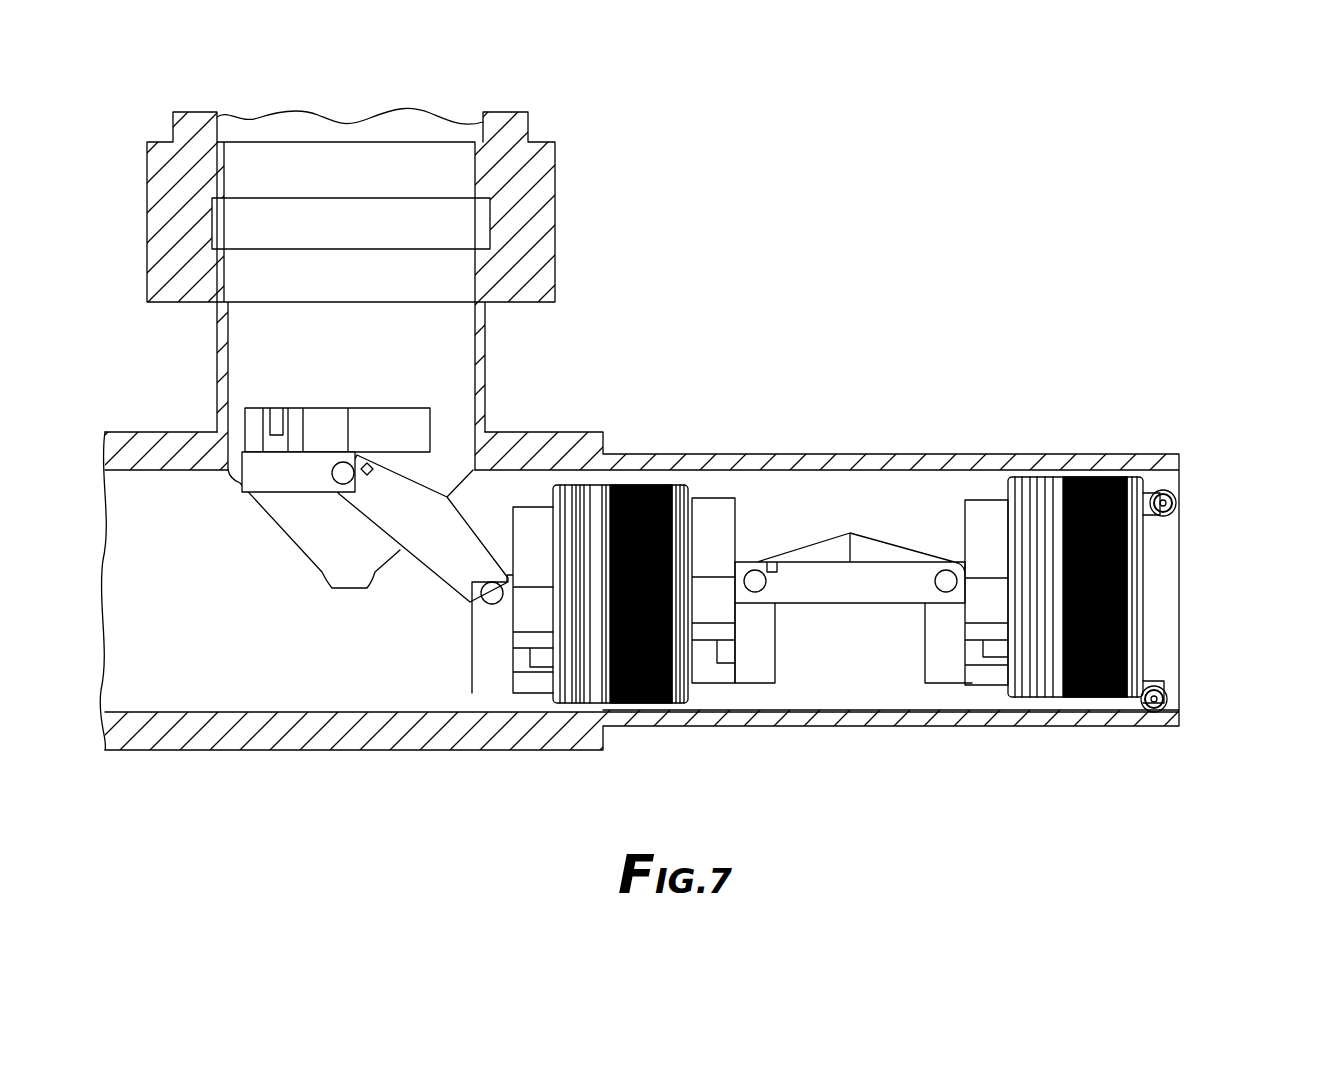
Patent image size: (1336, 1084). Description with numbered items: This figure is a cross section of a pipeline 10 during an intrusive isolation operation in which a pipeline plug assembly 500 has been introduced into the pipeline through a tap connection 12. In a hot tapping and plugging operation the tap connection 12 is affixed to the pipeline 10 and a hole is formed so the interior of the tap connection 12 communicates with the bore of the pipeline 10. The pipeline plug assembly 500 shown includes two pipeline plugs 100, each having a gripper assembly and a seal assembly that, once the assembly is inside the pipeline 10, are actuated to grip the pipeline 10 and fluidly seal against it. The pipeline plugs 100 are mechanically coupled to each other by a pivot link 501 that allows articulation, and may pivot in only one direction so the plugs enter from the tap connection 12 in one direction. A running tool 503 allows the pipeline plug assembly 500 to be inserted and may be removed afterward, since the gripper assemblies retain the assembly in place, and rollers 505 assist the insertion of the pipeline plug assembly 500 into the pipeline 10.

The pipeline 10 is at (943, 455).
The tap connection 12 is at (547, 225).
The pipeline plug 100 is at (655, 703).
The pipeline plug assembly 500 is at (813, 497).
The pivot link 501 is at (862, 593).
The running tool 503 is at (420, 427).
The roller 505 is at (1176, 502).